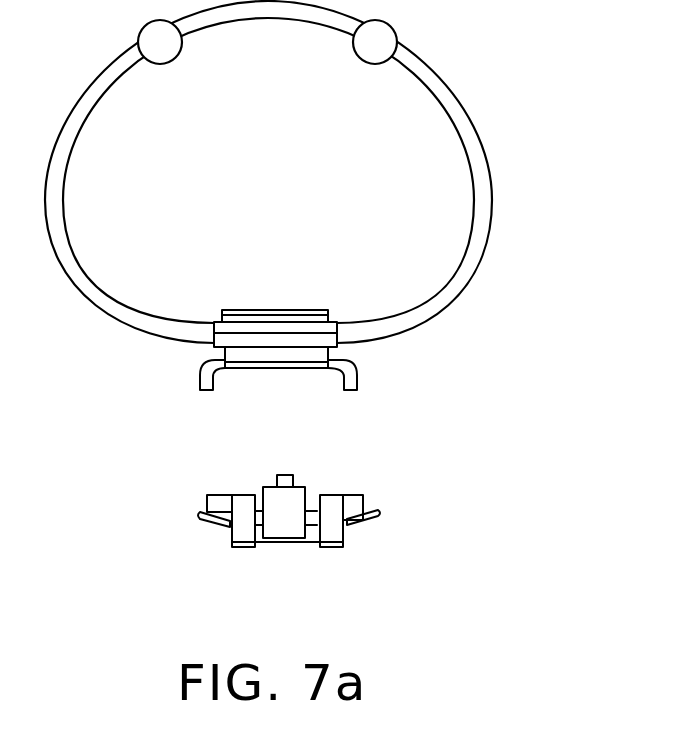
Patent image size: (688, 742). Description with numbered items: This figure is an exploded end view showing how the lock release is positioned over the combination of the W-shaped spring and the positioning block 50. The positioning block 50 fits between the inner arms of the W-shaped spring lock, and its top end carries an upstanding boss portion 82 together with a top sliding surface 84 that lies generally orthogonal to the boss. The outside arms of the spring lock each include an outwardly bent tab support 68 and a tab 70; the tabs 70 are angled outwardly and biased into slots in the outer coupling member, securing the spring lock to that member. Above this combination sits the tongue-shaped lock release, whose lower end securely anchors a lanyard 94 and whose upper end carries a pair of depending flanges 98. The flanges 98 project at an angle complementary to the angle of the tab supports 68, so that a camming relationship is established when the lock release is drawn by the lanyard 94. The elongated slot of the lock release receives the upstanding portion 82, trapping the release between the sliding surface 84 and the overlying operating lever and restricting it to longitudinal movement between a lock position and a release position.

The lanyard 94 is at (477, 120).
The depending flanges 98 is at (358, 378).
The positioning block 50 is at (273, 527).
The upstanding boss portion 82 is at (288, 476).
The top sliding surface 84 is at (262, 480).
The outwardly bent tab support 68 is at (355, 498).
The tab 70 is at (205, 521).